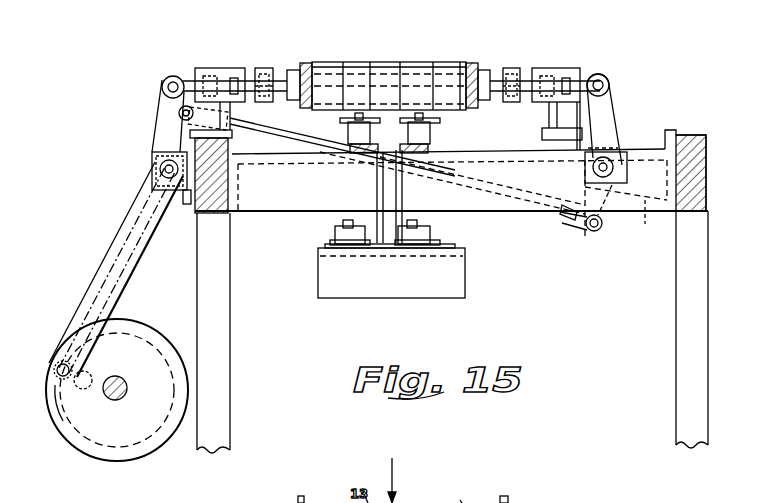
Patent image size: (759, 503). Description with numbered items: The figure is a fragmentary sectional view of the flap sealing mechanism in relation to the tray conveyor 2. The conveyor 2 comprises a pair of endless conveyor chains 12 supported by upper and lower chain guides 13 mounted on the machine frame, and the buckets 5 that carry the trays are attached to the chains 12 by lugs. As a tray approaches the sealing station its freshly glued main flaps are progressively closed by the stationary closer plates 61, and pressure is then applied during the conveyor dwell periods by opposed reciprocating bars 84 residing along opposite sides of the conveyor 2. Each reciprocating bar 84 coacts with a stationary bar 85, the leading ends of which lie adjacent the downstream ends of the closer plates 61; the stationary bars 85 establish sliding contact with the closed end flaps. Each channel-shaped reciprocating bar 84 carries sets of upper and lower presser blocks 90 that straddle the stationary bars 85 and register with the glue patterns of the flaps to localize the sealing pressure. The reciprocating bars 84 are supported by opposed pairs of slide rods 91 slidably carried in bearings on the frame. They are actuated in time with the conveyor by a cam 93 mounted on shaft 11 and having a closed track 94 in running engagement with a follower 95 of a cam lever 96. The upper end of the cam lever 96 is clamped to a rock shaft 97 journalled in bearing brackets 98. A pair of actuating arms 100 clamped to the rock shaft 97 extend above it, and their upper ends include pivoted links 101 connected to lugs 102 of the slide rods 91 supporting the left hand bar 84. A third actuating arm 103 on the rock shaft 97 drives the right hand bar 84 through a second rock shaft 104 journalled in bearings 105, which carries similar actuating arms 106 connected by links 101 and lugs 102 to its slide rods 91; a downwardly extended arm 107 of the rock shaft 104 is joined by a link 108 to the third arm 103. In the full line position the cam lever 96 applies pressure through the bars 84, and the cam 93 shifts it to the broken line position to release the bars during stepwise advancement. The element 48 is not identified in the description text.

The tray conveyor 2 is at (387, 74).
The bucket 5 is at (465, 280).
The shaft 11 is at (126, 387).
The conveyor chain 12 is at (425, 225).
The chain guide 13 is at (374, 245).
The member 48 is at (457, 489).
The closer plate 61 is at (290, 502).
The reciprocating bar 84 is at (511, 68).
The stationary bar 85 is at (318, 64).
The presser block 90 is at (306, 63).
The slide rod 91 is at (280, 100).
The cam 93 is at (144, 440).
The closed track 94 is at (62, 412).
The follower 95 is at (63, 364).
The cam lever 96 is at (112, 248).
The rock shaft 97 is at (160, 170).
The bearing bracket 98 is at (189, 206).
The actuating arm 100 is at (160, 108).
The pivoted link 101 is at (182, 76).
The lug 102 is at (259, 68).
The third actuating arm 103 is at (160, 130).
The rock shaft 104 is at (616, 150).
The bearing 105 is at (651, 220).
The actuating arm 106 is at (614, 109).
The downwardly extended arm 107 is at (602, 229).
The link 108 is at (486, 204).